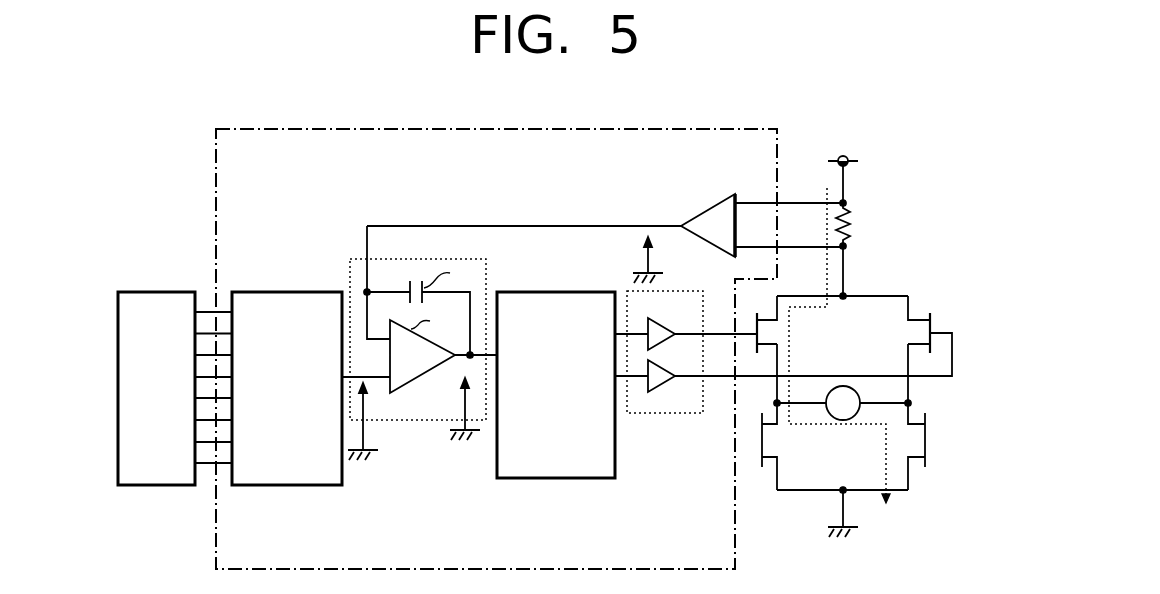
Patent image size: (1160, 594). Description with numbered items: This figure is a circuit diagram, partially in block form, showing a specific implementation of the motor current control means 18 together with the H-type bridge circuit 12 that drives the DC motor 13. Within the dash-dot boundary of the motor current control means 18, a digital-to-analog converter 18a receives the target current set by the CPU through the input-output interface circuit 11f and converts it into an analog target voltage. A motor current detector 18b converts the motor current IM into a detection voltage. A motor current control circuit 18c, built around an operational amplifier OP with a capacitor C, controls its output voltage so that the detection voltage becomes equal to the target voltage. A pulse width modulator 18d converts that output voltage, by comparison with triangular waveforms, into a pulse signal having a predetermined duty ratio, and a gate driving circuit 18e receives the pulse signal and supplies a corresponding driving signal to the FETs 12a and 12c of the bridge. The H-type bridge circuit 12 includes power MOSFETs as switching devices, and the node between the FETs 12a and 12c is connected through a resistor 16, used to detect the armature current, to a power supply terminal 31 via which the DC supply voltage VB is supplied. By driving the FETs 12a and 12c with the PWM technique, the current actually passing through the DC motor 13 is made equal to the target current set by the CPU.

The motor current control means 18 is at (747, 555).
The input-output interface circuit 11f is at (153, 291).
The digital-to-analog converter 18a is at (287, 291).
The motor current detector 18b is at (710, 207).
The motor current control circuit 18c is at (487, 260).
The pulse width modulator 18d is at (567, 480).
The gate driving circuit 18e is at (658, 420).
The power supply terminal 31 is at (843, 156).
The resistor 16 is at (850, 222).
The H-type bridge circuit 12 is at (867, 362).
The power MOSFET 12a is at (762, 333).
The power MOSFET 12c is at (931, 313).
The DC motor 13 is at (845, 386).